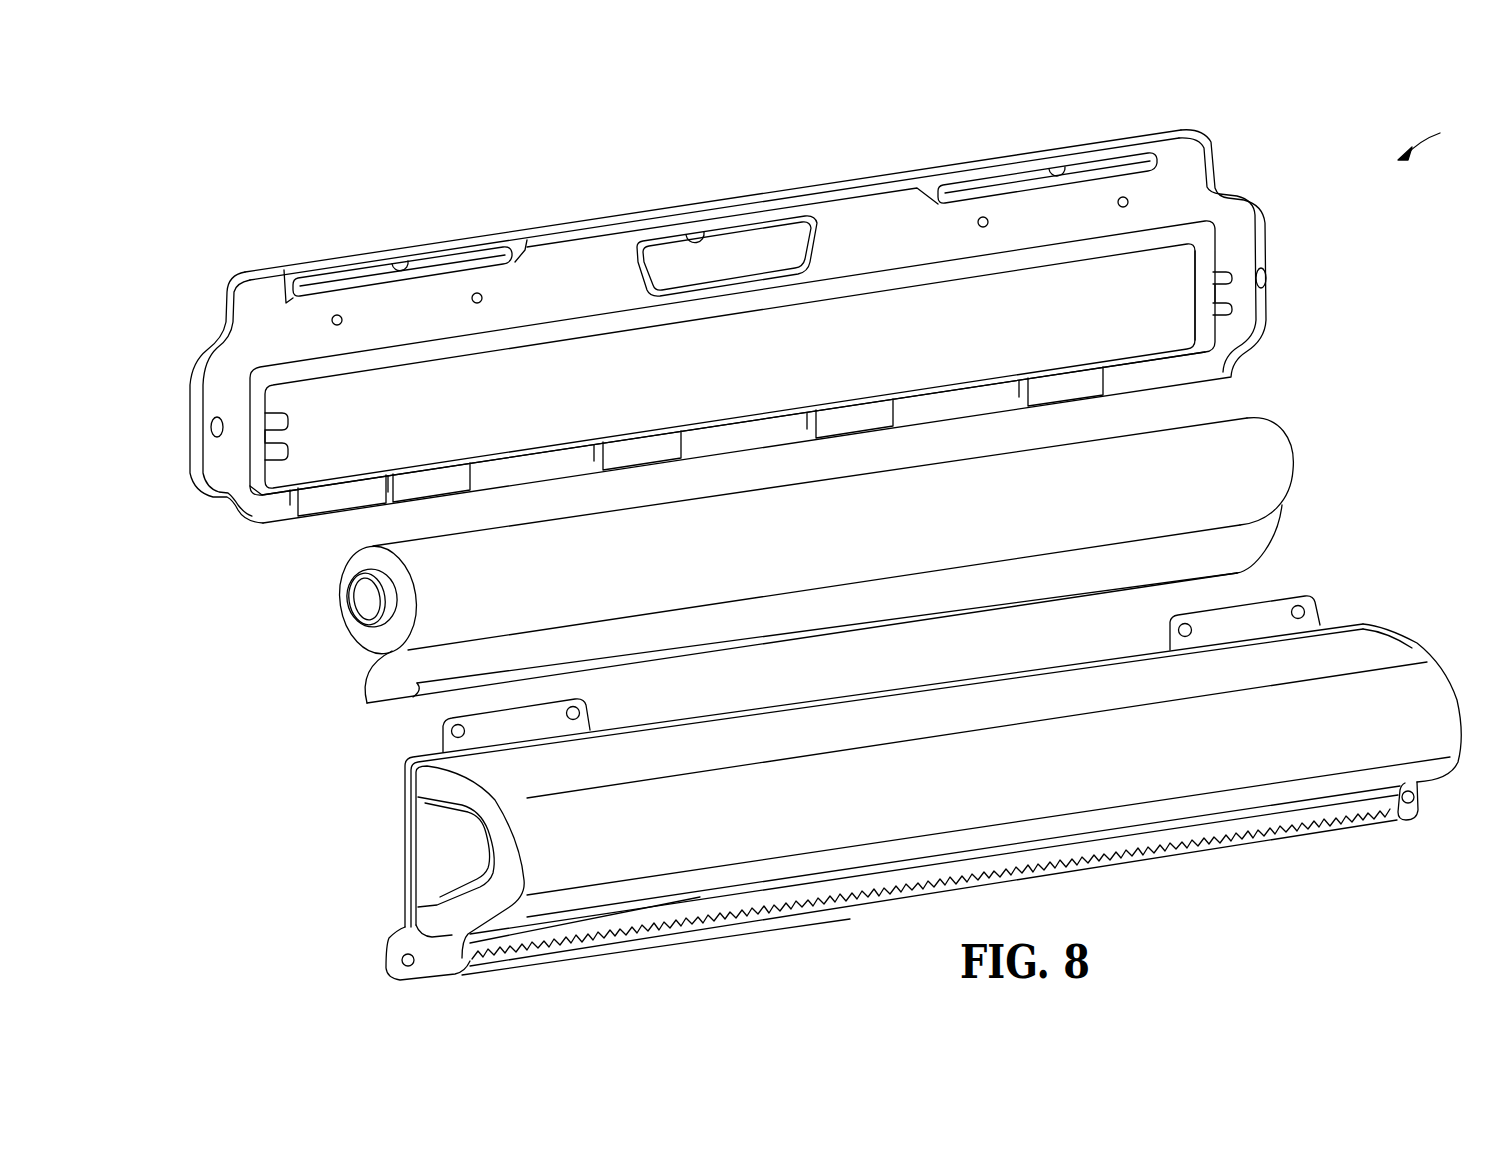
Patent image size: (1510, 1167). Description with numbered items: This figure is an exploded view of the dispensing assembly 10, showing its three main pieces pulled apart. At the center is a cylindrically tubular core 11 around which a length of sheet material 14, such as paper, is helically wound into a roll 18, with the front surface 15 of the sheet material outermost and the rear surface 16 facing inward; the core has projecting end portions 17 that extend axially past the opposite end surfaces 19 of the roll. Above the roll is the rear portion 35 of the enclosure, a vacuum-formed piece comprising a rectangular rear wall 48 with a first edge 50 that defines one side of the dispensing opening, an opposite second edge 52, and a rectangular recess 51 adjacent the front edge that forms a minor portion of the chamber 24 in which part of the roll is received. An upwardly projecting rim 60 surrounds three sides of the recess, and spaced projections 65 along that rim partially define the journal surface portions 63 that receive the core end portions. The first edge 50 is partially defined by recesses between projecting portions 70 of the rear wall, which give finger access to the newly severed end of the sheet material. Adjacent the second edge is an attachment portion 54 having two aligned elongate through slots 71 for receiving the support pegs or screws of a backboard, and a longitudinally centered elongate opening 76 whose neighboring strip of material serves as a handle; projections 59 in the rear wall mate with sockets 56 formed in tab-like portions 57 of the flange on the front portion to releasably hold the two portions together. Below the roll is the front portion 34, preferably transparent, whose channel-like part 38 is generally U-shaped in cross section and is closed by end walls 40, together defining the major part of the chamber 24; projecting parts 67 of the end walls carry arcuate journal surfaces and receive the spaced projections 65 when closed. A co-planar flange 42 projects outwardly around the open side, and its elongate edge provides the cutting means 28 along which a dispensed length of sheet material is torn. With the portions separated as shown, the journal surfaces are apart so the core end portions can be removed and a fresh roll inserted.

The dispensing assembly 10 is at (1443, 133).
The cylindrically tubular core 11 is at (362, 600).
The length of sheet material 14 is at (688, 633).
The front surface 15 is at (417, 684).
The rear surface 16 is at (353, 683).
The projecting end portions 17 is at (380, 575).
The roll 18 is at (1268, 440).
The end surfaces 19 is at (372, 640).
The chamber 24 is at (1163, 262).
The cutting means 28 is at (1362, 826).
The front portion 34 is at (1368, 625).
The rear portion 35 is at (1222, 162).
The channel-like part 38 is at (1263, 765).
The end walls 40 is at (507, 897).
The flange 42 is at (405, 759).
The rear wall 48 is at (226, 323).
The first edge 50 is at (540, 468).
The rectangular recess 51 is at (918, 318).
The second edge 52 is at (778, 192).
The attachment portion 54 is at (845, 215).
The sockets 56 is at (1302, 611).
The tab-like portions 57 is at (1273, 600).
The projections 59 is at (984, 216).
The rim 60 is at (583, 324).
The journal surface portions 63 is at (276, 440).
The spaced projections 65 is at (265, 424).
The projecting parts 67 is at (440, 865).
The projecting portions 70 is at (848, 415).
The elongate through slots 71 is at (405, 264).
The elongate opening 76 is at (690, 228).